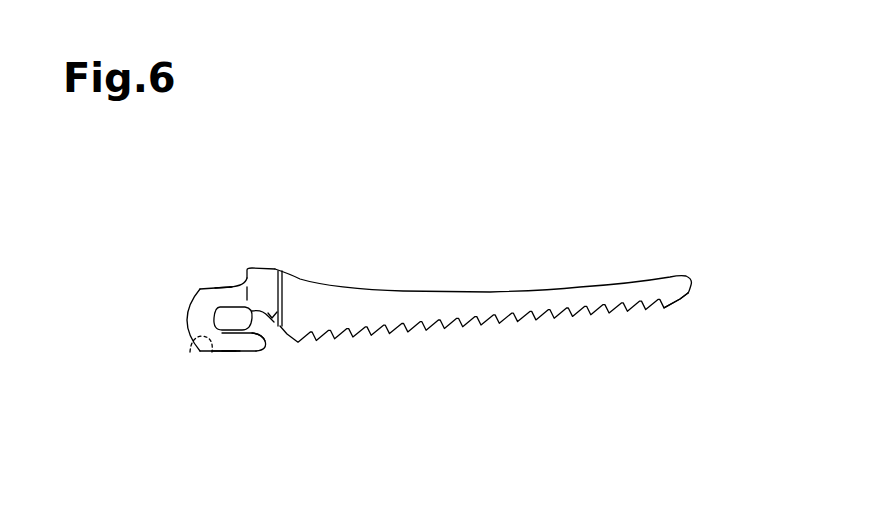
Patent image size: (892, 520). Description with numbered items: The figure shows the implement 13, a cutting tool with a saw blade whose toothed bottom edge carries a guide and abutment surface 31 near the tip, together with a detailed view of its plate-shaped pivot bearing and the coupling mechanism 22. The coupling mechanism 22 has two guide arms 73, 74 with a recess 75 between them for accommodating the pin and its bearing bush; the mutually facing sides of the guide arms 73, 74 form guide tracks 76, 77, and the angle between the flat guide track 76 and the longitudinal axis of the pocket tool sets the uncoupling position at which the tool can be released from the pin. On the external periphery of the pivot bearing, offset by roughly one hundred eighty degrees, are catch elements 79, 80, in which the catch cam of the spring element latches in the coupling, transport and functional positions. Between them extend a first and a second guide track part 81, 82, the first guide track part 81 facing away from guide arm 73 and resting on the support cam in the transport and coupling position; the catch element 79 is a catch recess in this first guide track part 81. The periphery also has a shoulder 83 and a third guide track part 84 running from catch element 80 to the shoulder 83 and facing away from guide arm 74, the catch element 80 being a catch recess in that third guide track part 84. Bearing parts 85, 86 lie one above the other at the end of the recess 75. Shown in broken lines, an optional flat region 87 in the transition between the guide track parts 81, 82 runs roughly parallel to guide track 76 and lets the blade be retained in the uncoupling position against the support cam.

The implement 13 is at (578, 232).
The guide and abutment surface 31 is at (672, 305).
The guide arm 74 is at (253, 298).
The guide track 77 is at (270, 333).
The recess 75 is at (250, 328).
The catch element 80 is at (203, 289).
The third guide track part 84 is at (229, 287).
The shoulder 83 is at (242, 282).
The bearing part 86 is at (190, 297).
The second guide track part 82 is at (202, 322).
The guide track 76 is at (218, 323).
The flat region 87 is at (195, 338).
The first guide track part 81 is at (222, 350).
The coupling mechanism 22 is at (229, 364).
The bearing part 85 is at (229, 353).
The catch element 79 is at (253, 350).
The guide arm 73 is at (265, 345).